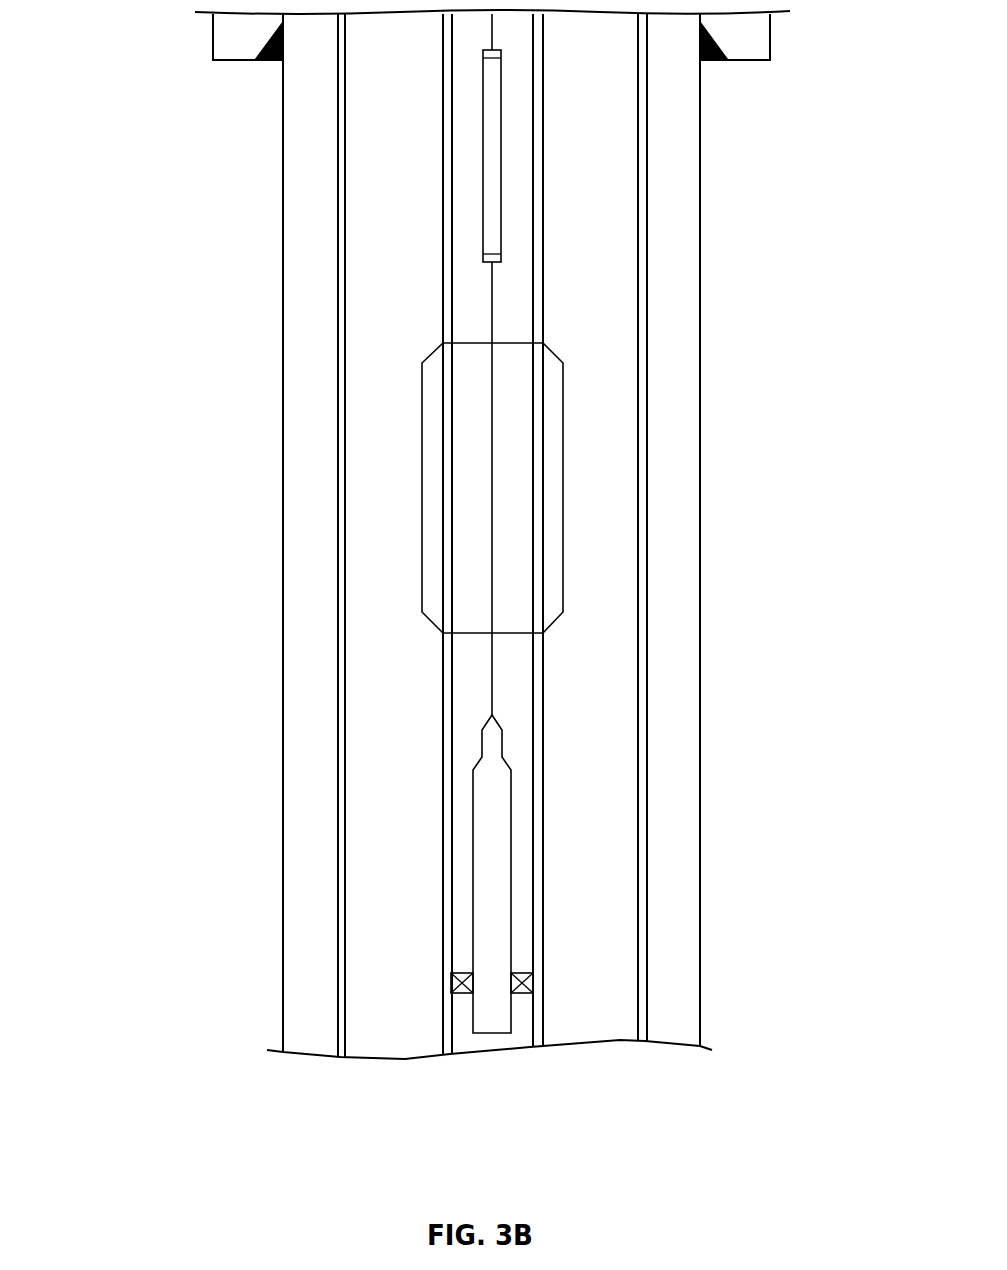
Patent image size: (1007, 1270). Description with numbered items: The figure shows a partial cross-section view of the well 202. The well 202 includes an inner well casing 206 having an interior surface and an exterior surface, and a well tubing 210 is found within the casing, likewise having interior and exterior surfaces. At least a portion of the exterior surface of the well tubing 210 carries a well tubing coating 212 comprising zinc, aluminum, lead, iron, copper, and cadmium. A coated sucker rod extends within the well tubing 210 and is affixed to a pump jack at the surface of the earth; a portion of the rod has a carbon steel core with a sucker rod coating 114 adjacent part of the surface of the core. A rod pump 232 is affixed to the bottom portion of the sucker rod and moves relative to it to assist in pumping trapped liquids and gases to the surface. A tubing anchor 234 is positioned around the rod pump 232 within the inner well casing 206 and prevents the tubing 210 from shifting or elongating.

The well 202 is at (245, 133).
The inner well casing 206 is at (305, 218).
The well tubing 210 is at (437, 293).
The sucker rod coating 114 is at (492, 188).
The well tubing coating 212 is at (430, 453).
The rod pump 232 is at (483, 796).
The tubing anchor 234 is at (512, 973).